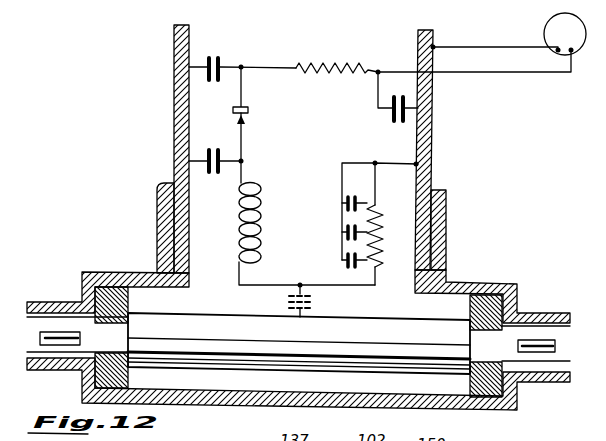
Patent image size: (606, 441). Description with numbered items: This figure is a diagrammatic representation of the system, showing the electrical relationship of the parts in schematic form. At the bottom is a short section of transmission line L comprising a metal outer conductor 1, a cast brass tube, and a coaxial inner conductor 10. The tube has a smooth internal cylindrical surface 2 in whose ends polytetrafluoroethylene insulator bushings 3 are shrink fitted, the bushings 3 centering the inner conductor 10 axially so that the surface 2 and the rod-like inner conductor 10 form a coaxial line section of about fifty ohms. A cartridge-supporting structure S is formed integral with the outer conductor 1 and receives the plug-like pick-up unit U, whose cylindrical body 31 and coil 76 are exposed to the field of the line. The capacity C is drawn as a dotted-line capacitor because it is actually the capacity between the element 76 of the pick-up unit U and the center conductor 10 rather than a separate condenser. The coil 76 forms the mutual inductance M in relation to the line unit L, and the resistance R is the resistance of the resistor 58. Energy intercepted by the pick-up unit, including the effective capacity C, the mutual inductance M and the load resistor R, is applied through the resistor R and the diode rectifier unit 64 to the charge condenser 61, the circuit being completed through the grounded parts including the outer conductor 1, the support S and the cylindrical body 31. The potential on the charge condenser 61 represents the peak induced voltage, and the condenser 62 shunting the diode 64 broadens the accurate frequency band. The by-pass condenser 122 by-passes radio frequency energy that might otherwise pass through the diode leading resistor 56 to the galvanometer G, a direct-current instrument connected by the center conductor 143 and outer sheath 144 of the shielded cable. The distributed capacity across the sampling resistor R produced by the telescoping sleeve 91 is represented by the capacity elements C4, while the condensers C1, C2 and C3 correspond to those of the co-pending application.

The outer conductor 1 is at (237, 403).
The internal cylindrical surface 2 is at (260, 390).
The insulator bushings 3 is at (130, 373).
The inner conductor 10 is at (356, 360).
The cylindrical body 31 is at (174, 110).
The diode leading resistor 56 is at (337, 64).
The resistor 58 is at (446, 209).
The charge condenser 61 is at (218, 58).
The condenser 62 is at (218, 172).
The diode rectifier unit 64 is at (248, 111).
The coil 76 is at (265, 237).
The telescoping sleeve 91 is at (331, 221).
The by-pass condenser 122 is at (405, 119).
The center conductor 143 is at (515, 74).
The outer sheath 144 is at (483, 45).
The pick-up unit U is at (146, 78).
The cartridge-supporting structure S is at (157, 202).
The transmission line L is at (95, 272).
The mutual inductance M is at (273, 262).
The capacity C is at (286, 300).
The resistance R is at (418, 212).
The galvanometer G is at (565, 34).
The condenser C1 is at (219, 150).
The condenser C2 is at (210, 80).
The condenser C3 is at (390, 117).
The capacity elements C4 is at (315, 247).